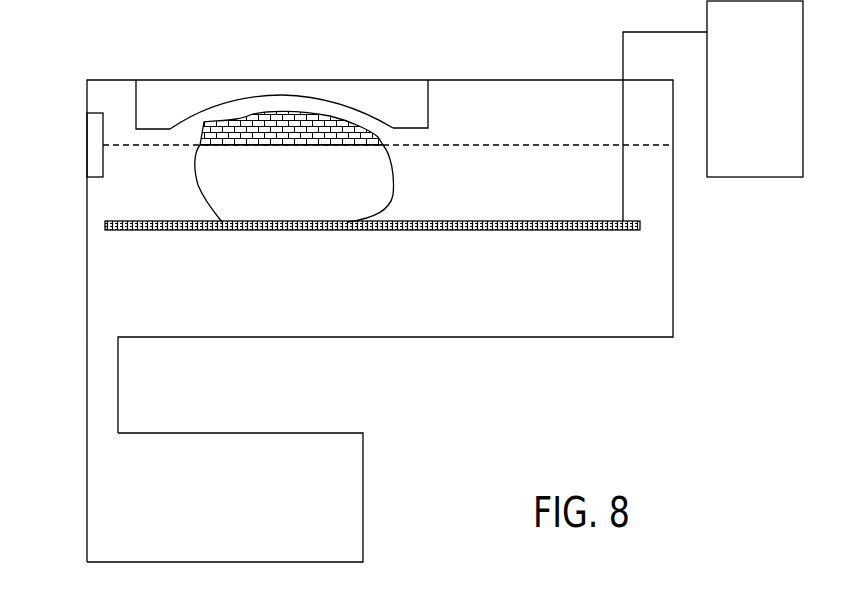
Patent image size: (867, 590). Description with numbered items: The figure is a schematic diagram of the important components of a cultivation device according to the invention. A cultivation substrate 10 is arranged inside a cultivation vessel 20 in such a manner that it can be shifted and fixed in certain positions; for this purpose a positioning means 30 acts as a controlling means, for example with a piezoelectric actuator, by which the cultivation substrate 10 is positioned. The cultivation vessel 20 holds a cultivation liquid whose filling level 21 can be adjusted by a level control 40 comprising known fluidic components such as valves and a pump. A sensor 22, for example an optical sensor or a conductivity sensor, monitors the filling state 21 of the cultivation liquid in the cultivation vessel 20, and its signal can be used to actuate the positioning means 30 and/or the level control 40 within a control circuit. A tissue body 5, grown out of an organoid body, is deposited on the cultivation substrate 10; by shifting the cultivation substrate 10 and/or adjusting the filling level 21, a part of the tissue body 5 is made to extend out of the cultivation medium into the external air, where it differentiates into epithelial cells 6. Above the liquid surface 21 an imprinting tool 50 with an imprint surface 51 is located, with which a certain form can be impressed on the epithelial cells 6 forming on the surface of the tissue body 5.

The tissue body 5 is at (232, 176).
The epithelial cells 6 is at (258, 122).
The cultivation substrate 10 is at (567, 230).
The cultivation vessel 20 is at (543, 337).
The filling level 21 is at (158, 145).
The sensor 22 is at (87, 145).
The positioning means 30 is at (770, 162).
The level control 40 is at (342, 477).
The imprinting tool 50 is at (267, 80).
The imprint surface 51 is at (332, 102).